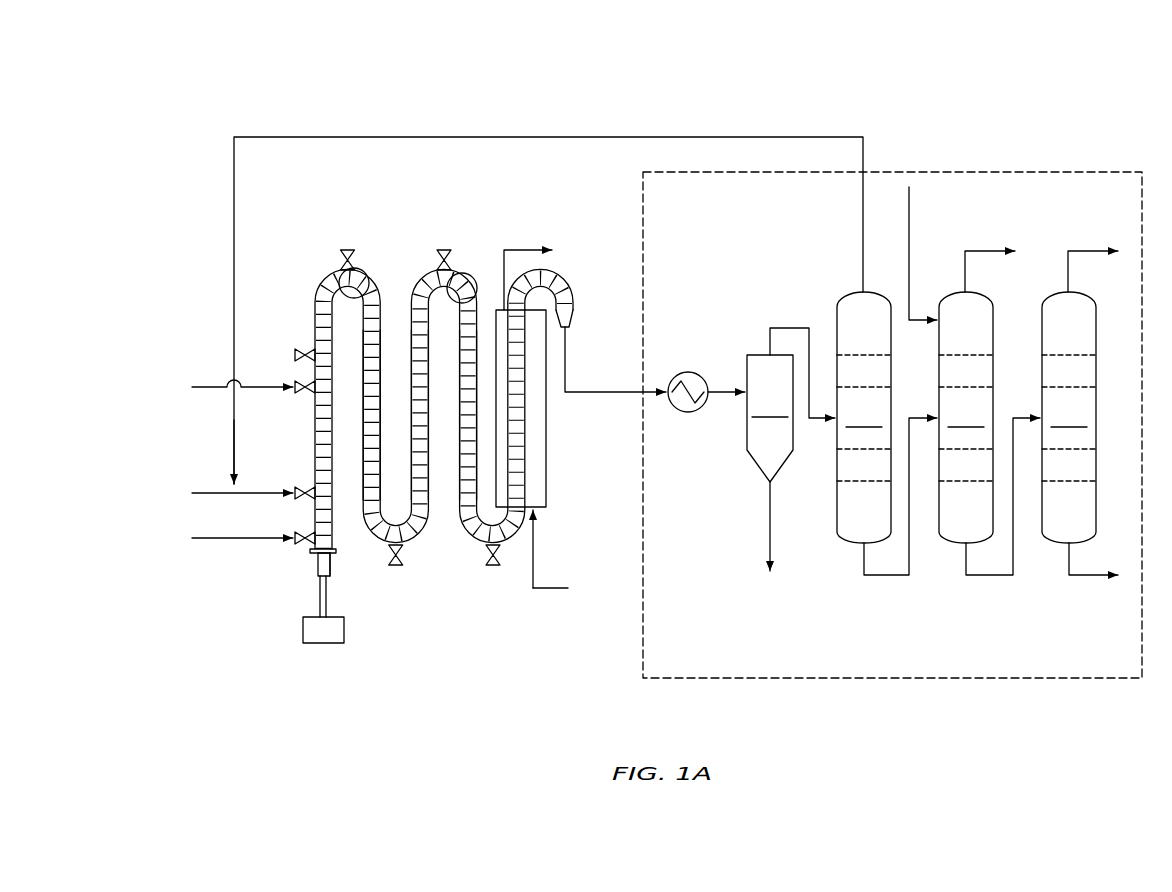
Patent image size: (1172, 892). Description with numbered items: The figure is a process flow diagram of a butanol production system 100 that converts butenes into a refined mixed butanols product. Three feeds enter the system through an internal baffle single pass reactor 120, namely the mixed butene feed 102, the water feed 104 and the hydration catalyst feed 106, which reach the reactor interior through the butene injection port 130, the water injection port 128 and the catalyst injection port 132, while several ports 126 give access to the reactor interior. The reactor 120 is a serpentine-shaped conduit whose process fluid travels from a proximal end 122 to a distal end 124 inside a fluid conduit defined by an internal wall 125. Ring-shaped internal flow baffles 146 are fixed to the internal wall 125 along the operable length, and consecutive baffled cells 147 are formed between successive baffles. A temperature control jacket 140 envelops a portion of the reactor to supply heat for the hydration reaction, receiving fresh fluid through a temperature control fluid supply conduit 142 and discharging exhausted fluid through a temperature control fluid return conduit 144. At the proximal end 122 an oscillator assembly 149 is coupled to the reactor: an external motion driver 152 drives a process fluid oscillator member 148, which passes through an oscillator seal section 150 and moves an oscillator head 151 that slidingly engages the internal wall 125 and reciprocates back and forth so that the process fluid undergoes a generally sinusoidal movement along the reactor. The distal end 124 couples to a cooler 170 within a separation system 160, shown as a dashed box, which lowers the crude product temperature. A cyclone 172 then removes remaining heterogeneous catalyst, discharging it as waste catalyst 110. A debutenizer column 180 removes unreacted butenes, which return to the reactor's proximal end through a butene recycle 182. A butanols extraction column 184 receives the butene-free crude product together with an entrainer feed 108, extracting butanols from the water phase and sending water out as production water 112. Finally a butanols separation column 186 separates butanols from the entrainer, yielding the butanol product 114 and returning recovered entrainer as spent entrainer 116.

The butanol production system 100 is at (255, 117).
The mixed butene feed 102 is at (222, 495).
The water feed 104 is at (235, 540).
The hydration catalyst feed 106 is at (222, 389).
The entrainer feed 108 is at (910, 210).
The waste catalyst 110 is at (770, 524).
The production water 112 is at (966, 250).
The butanol product 114 is at (1069, 250).
The spent entrainer 116 is at (1088, 578).
The internal baffle single pass reactor 120 is at (410, 402).
The proximal end 122 is at (318, 573).
The distal end 124 is at (566, 335).
The internal wall 125 is at (320, 312).
The ports 126 is at (300, 352).
The water injection port 128 is at (300, 532).
The butene injection port 130 is at (300, 487).
The catalyst injection port 132 is at (300, 392).
The temperature control jacket 140 is at (546, 432).
The temperature control fluid supply conduit 142 is at (568, 588).
The temperature control fluid return conduit 144 is at (522, 250).
The internal flow baffles 146 is at (418, 335).
The baffled cells 147 is at (358, 270).
The process fluid oscillator member 148 is at (320, 601).
The oscillator assembly 149 is at (364, 626).
The oscillator seal section 150 is at (330, 568).
The oscillator head 151 is at (310, 551).
The external motion driver 152 is at (303, 633).
The separation system 160 is at (862, 678).
The cooler 170 is at (690, 372).
The cyclone 172 is at (791, 405).
The debutenizer column 180 is at (887, 433).
The butene recycle 182 is at (480, 137).
The butanols extraction column 184 is at (989, 433).
The butanols separation column 186 is at (1069, 417).